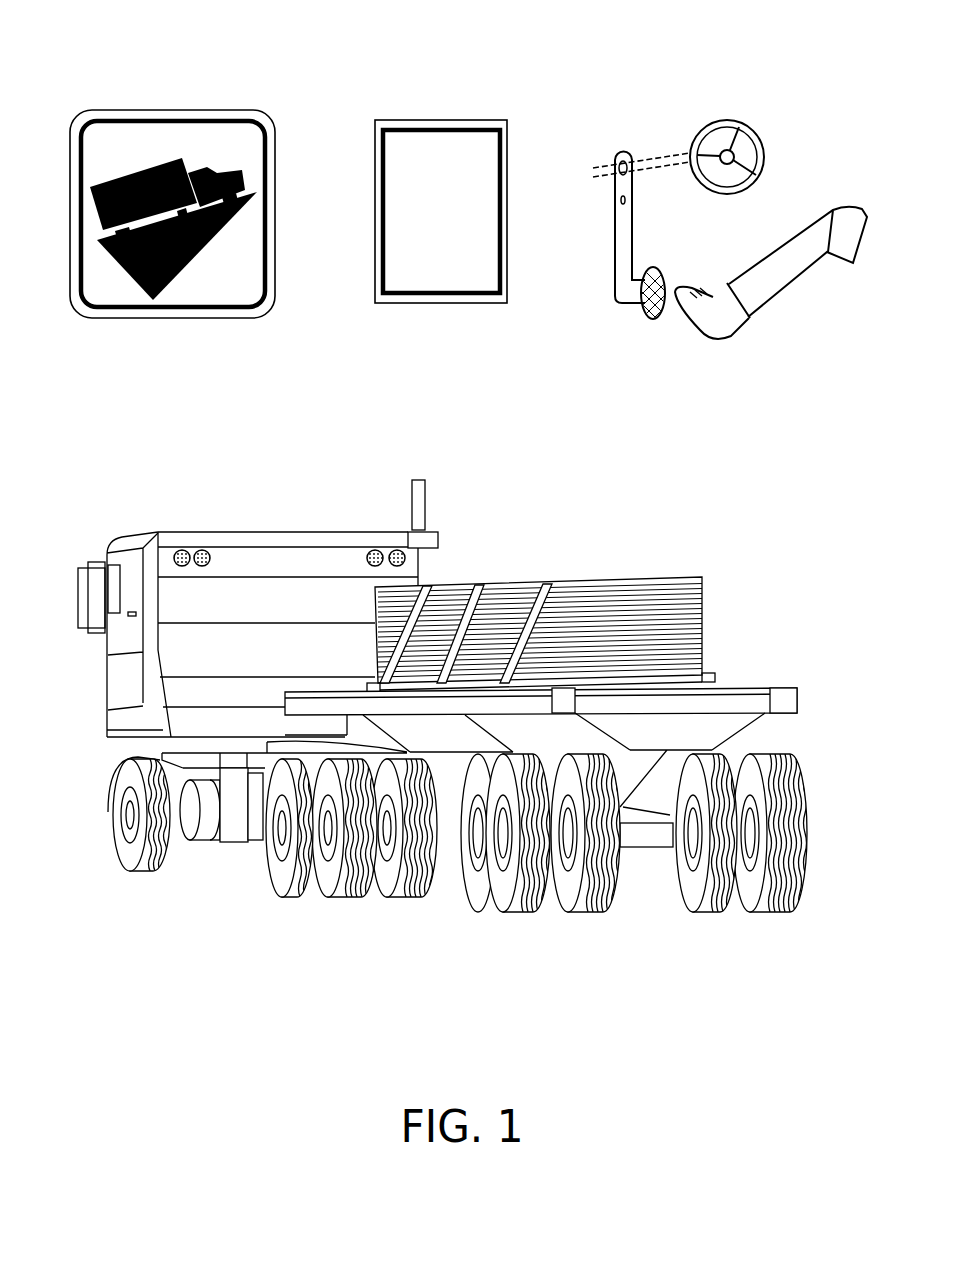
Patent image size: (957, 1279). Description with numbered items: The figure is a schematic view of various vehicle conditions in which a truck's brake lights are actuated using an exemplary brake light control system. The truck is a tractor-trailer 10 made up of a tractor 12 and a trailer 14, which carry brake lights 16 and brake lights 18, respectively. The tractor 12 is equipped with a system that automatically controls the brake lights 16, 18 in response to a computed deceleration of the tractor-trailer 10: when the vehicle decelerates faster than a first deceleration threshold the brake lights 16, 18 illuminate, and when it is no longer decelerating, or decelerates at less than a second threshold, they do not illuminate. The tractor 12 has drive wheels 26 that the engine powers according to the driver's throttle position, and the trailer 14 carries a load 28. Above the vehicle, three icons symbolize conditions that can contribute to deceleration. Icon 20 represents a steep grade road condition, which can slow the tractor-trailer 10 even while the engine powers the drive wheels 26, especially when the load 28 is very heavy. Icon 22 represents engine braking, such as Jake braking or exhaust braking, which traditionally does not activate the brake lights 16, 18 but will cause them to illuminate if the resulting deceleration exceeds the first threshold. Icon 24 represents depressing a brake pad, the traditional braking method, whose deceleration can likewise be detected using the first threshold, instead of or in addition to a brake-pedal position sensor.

The tractor-trailer 10 is at (521, 500).
The tractor 12 is at (195, 853).
The trailer 14 is at (541, 876).
The brake lights 16 is at (370, 547).
The brake lights 18 is at (770, 700).
The icon 20 is at (178, 140).
The icon 22 is at (442, 145).
The icon 24 is at (642, 113).
The drive wheels 26 is at (400, 897).
The load 28 is at (625, 610).